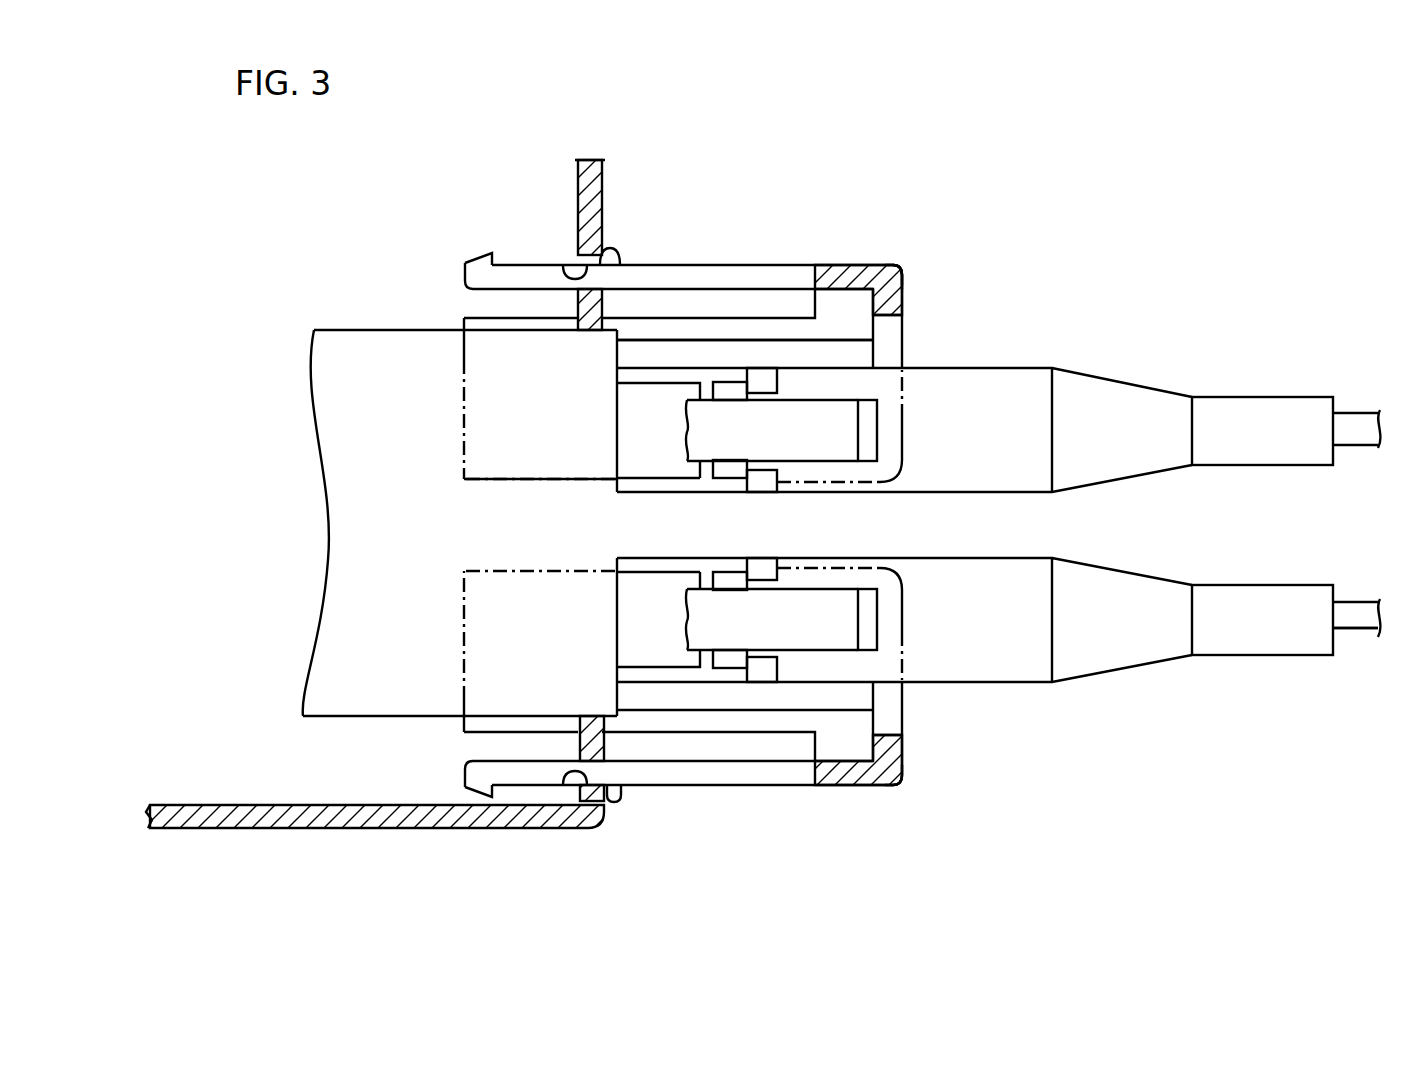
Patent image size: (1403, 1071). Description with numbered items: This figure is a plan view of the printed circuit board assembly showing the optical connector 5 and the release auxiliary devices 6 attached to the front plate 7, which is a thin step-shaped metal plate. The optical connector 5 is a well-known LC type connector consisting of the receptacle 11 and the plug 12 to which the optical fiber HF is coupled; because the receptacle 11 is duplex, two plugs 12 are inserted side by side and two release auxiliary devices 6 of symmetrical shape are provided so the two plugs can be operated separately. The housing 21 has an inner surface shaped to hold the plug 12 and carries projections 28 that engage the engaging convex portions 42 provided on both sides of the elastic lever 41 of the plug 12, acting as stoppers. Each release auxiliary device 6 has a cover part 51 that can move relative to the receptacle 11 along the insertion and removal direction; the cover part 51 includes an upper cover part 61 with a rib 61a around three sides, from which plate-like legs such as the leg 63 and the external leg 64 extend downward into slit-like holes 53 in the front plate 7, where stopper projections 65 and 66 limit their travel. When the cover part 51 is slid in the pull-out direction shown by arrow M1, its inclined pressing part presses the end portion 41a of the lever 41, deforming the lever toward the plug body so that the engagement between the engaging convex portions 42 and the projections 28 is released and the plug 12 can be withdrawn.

The optical connector 5 is at (832, 190).
The release auxiliary device 6 is at (906, 266).
The front plate 7 is at (352, 830).
The receptacle 11 is at (326, 717).
The plug 12 is at (990, 385).
The housing 21 is at (690, 697).
The projections 28 is at (760, 378).
The lever 41 is at (818, 447).
The end portion of the lever 41a is at (868, 452).
The engaging convex portions 42 is at (728, 572).
The cover part 51 is at (906, 290).
The slit-like holes 53 is at (566, 270).
The upper cover part 61 is at (885, 340).
The rib 61a is at (838, 270).
The leg 63 is at (508, 272).
The external leg 64 is at (677, 330).
The stopper projection 65 is at (478, 262).
The stopper projection 66 is at (616, 250).
The arrow M1 is at (985, 180).
The optical fiber HF is at (1355, 630).